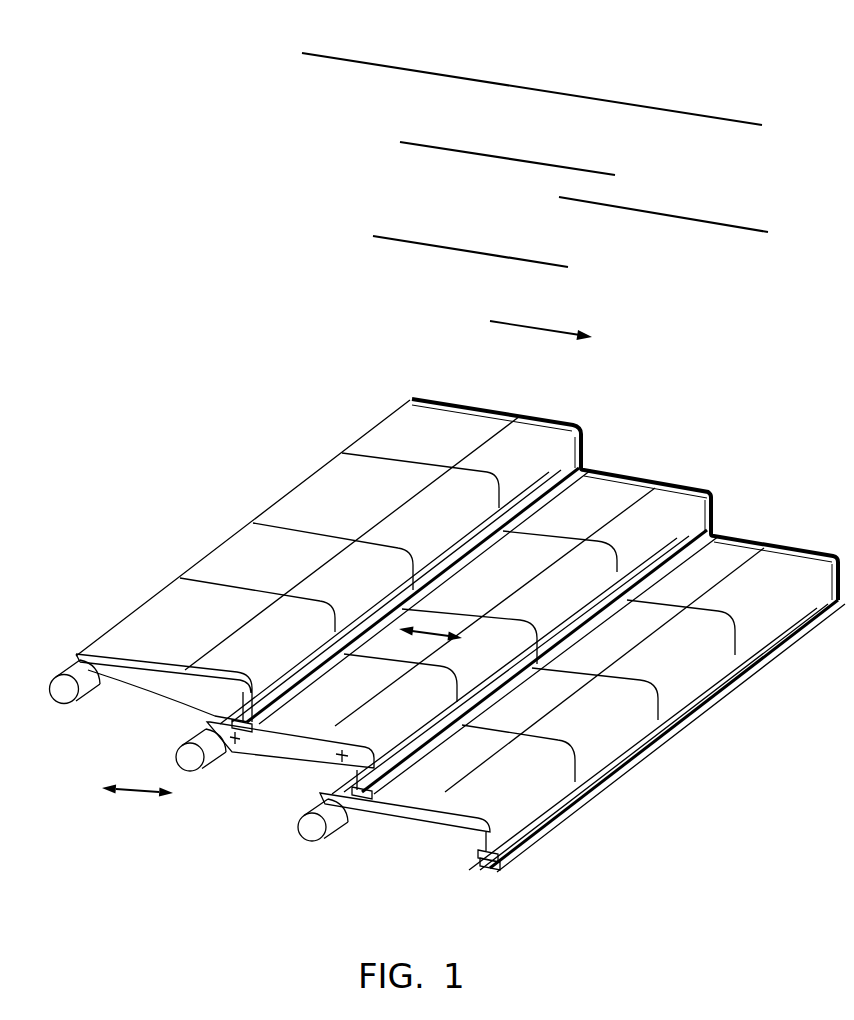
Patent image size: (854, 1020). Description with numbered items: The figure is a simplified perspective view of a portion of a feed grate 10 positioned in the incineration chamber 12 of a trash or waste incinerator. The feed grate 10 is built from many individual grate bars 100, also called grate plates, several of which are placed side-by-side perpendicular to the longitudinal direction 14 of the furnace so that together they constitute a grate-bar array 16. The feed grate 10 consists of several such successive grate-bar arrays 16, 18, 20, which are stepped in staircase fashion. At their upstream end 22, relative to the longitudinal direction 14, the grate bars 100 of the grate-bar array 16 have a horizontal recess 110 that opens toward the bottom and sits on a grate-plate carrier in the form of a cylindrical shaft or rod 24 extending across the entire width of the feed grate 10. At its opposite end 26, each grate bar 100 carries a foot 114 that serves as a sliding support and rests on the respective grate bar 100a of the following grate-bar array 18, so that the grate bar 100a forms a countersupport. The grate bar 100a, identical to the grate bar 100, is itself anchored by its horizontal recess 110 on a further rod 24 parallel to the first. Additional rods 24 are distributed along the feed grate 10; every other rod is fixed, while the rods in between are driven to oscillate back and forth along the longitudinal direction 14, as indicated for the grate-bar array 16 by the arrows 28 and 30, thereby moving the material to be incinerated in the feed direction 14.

The feed grate 10 is at (297, 413).
The incineration chamber 12 is at (408, 112).
The longitudinal direction 14 is at (557, 330).
The grate-bar array 16 is at (141, 558).
The grate-bar array 18 is at (624, 435).
The grate-bar array 20 is at (754, 495).
The upstream end 22 is at (193, 545).
The rod 24 is at (64, 705).
The opposite end 26 is at (367, 580).
The arrow 28 is at (133, 798).
The arrow 30 is at (428, 642).
The grate bar 100 is at (240, 555).
The grate bar 100a is at (505, 628).
The horizontal recess 110 is at (86, 678).
The foot 114 is at (425, 612).